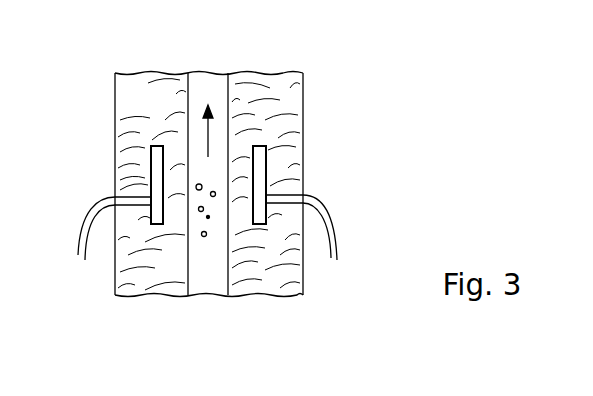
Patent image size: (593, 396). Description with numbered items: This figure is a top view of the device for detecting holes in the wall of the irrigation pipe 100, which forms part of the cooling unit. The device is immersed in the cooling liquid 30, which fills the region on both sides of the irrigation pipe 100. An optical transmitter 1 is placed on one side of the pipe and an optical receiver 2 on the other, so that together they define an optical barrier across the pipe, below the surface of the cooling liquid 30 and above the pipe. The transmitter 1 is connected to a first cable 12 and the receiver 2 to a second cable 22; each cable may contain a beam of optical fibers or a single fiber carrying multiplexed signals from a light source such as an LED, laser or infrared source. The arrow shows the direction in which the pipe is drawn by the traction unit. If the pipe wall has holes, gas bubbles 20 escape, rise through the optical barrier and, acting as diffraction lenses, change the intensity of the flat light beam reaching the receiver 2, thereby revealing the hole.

The irrigation pipe 100 is at (207, 83).
The cooling liquid 30 is at (157, 109).
The optical transmitter 1 is at (150, 155).
The optical receiver 2 is at (267, 160).
The first cable 12 is at (112, 198).
The second cable 22 is at (308, 197).
The gas bubbles 20 is at (203, 237).